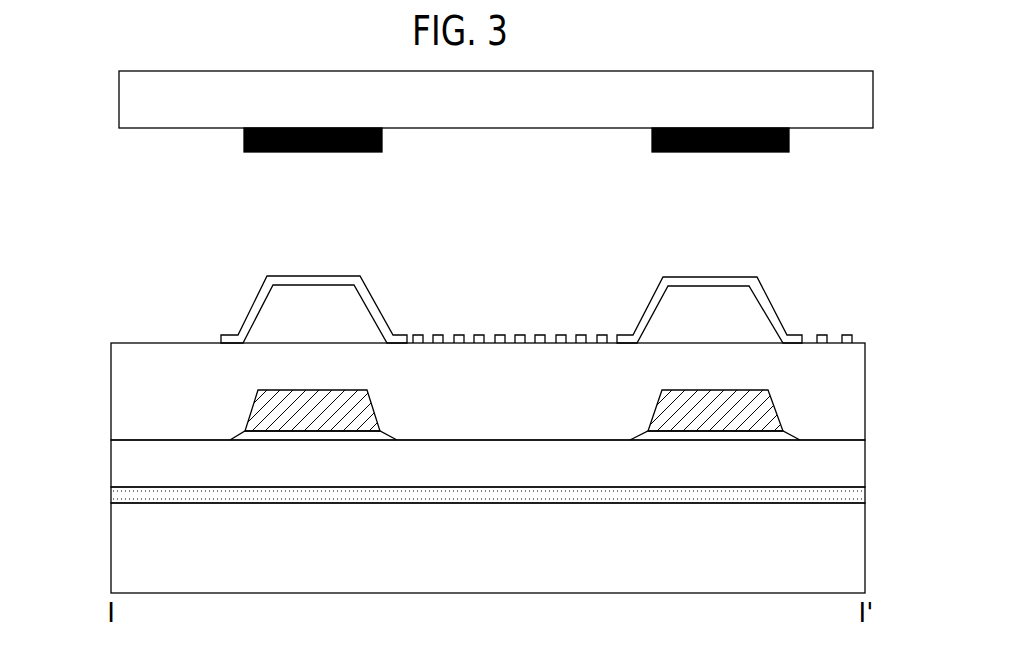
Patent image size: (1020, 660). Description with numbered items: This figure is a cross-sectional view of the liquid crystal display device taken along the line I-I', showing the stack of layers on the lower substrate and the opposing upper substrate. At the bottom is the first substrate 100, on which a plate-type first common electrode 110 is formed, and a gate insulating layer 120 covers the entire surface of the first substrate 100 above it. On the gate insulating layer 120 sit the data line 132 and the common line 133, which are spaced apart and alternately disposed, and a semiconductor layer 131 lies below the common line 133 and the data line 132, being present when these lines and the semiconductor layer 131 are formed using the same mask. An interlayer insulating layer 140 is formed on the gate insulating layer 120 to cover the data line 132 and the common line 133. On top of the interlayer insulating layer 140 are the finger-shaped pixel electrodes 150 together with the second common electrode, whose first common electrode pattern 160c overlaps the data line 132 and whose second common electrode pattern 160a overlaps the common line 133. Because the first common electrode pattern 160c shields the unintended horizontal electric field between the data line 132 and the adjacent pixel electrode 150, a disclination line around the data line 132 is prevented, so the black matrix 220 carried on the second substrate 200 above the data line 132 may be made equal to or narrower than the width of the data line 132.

The first substrate 100 is at (840, 553).
The first common electrode 110 is at (840, 493).
The gate insulating layer 120 is at (135, 459).
The semiconductor layer 131 is at (648, 433).
The data line 132 is at (262, 412).
The common line 133 is at (720, 405).
The interlayer insulating layer 140 is at (135, 368).
The pixel electrode 150 is at (455, 334).
The second common electrode pattern 160a is at (699, 277).
The first common electrode pattern 160c is at (300, 276).
The second substrate 200 is at (459, 121).
The black matrix 220 is at (429, 177).